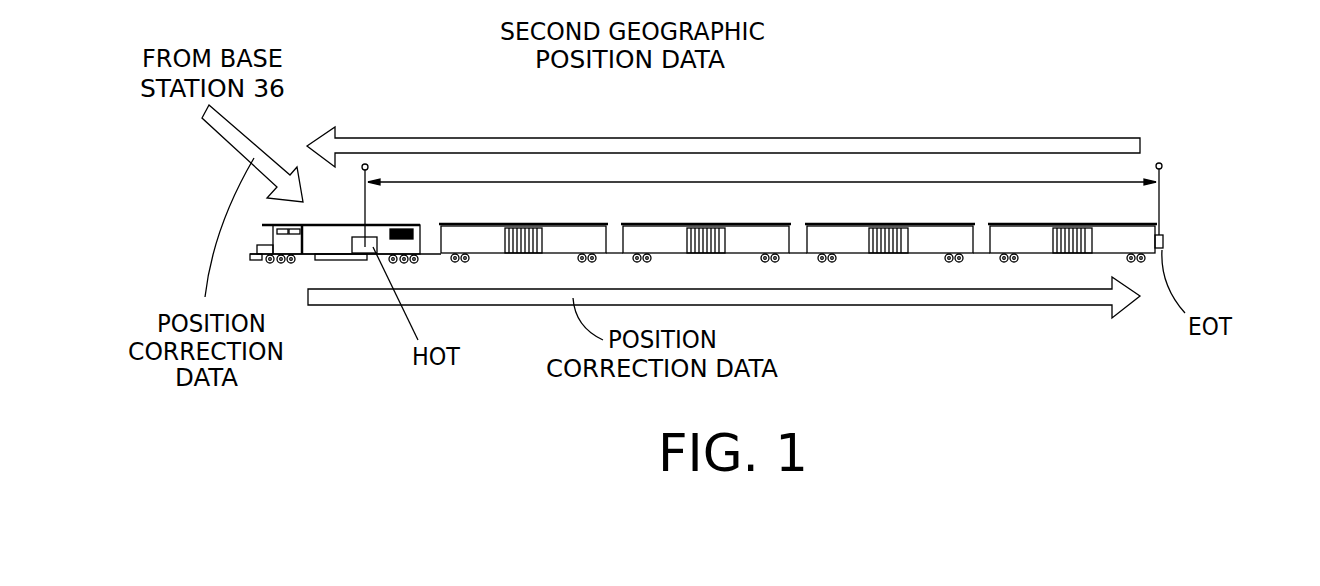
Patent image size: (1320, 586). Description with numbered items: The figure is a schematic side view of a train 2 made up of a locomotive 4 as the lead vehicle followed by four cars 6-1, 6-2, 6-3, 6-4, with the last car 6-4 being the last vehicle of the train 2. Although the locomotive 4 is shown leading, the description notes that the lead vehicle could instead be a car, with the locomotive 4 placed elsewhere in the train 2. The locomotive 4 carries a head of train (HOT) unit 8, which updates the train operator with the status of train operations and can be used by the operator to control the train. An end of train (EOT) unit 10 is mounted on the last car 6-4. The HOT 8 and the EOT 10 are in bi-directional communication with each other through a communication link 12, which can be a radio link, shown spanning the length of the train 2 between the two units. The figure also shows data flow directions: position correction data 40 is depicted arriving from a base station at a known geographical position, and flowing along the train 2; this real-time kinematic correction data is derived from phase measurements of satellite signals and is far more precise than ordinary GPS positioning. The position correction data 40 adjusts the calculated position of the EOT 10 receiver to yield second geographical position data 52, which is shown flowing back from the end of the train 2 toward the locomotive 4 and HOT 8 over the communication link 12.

The train 2 is at (207, 241).
The locomotive 4 is at (345, 289).
The first car 6-1 is at (578, 235).
The second car 6-2 is at (743, 235).
The third car 6-3 is at (936, 240).
The last car 6-4 is at (1118, 238).
The head of train (HOT) unit 8 is at (368, 248).
The end of train (EOT) unit 10 is at (1163, 242).
The communication link 12 is at (868, 182).
The position correction data 40 is at (222, 130).
The second geographical position data 52 is at (420, 138).